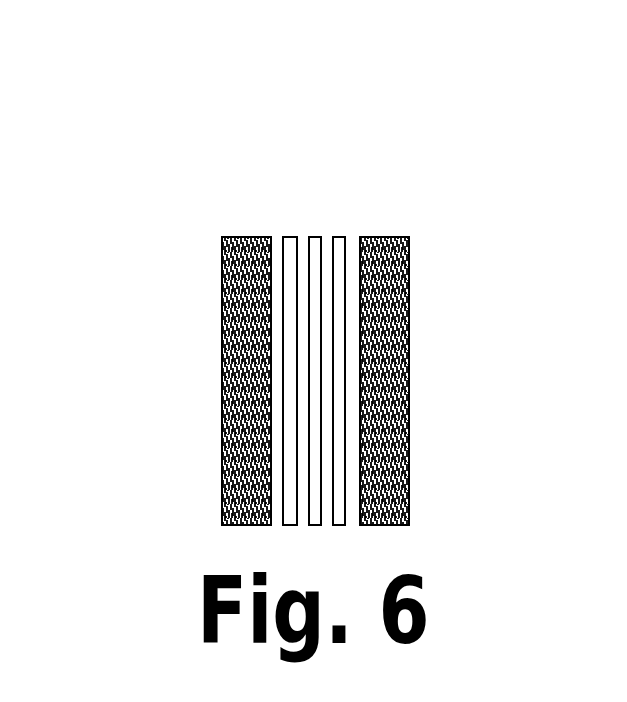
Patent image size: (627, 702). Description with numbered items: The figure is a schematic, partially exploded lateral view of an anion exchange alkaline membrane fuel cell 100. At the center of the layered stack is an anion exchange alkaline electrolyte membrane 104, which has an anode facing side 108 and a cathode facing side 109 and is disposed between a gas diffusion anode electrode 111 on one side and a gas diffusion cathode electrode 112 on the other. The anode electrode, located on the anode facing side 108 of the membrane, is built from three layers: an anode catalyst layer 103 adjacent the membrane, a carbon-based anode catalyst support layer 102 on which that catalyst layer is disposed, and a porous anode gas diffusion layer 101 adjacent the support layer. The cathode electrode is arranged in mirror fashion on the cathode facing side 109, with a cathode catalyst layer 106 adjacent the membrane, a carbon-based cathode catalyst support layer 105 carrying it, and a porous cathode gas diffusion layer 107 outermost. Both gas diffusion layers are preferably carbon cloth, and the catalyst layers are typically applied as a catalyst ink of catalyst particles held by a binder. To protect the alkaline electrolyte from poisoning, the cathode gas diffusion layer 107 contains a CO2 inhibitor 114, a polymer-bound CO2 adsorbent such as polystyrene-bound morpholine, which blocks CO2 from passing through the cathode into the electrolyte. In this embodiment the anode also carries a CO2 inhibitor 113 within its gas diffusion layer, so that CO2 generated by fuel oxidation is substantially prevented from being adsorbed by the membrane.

The anion exchange alkaline membrane fuel cell 100 is at (436, 122).
The porous anode gas diffusion layer 101 is at (235, 468).
The carbon-based anode catalyst support layer 102 is at (280, 408).
The anode catalyst layer 103 is at (291, 347).
The anion exchange alkaline electrolyte membrane 104 is at (315, 372).
The carbon-based cathode catalyst support layer 105 is at (352, 475).
The cathode catalyst layer 106 is at (338, 422).
The porous cathode gas diffusion layer 107 is at (409, 525).
The anode facing side 108 is at (300, 287).
The cathode facing side 109 is at (323, 320).
The gas diffusion anode electrode 111 is at (268, 236).
The gas diffusion cathode electrode 112 is at (367, 232).
The CO2 inhibitor 113 is at (230, 507).
The CO2 inhibitor 114 is at (392, 251).